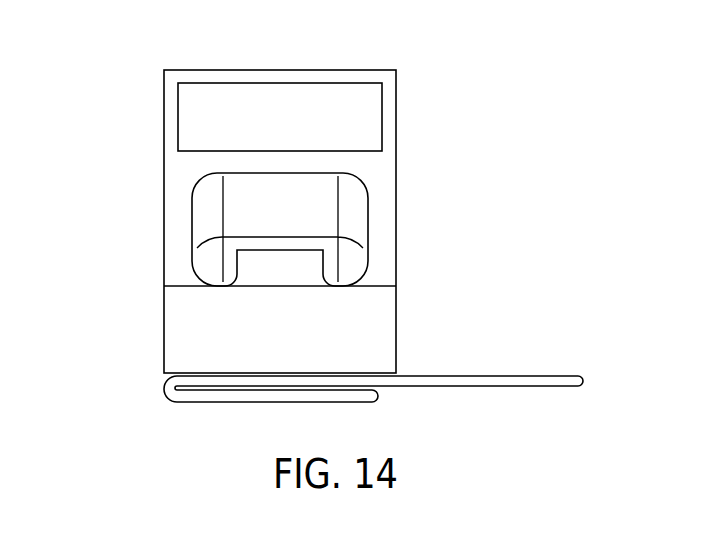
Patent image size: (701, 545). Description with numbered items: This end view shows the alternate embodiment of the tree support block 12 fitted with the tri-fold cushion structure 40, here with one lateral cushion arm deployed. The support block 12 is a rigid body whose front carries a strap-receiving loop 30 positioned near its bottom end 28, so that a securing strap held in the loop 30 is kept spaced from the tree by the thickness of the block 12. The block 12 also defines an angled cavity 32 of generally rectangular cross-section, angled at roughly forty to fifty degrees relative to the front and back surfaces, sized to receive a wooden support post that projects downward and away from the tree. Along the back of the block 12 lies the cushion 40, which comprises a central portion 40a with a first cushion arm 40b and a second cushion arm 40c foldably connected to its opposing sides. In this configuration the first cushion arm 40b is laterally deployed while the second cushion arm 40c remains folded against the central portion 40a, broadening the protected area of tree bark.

The support block 12 is at (251, 189).
The bottom end 28 is at (297, 350).
The strap-receiving loop 30 is at (285, 249).
The angled cavity 32 is at (372, 113).
The tri-fold cushion structure 40 is at (317, 389).
The central portion 40a is at (205, 380).
The first cushion arm 40b is at (482, 373).
The second cushion arm 40c is at (212, 405).